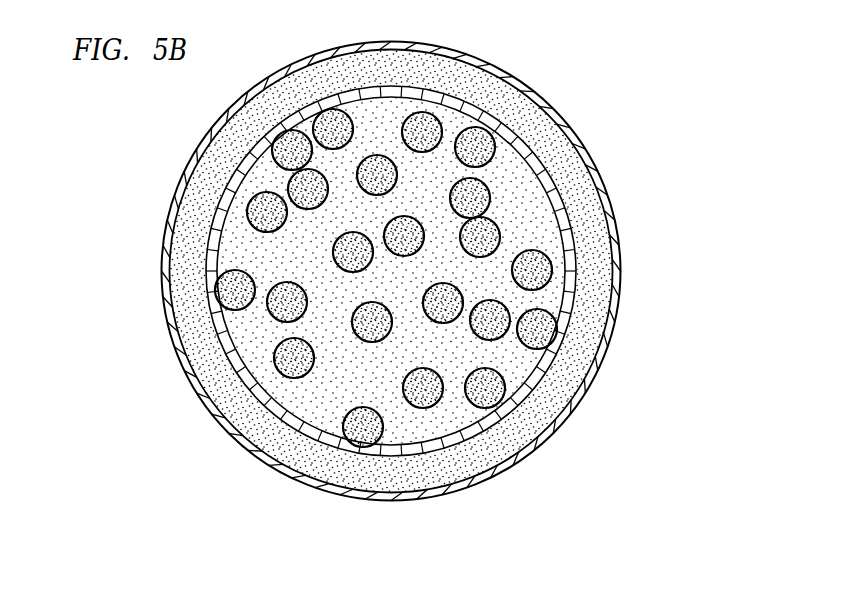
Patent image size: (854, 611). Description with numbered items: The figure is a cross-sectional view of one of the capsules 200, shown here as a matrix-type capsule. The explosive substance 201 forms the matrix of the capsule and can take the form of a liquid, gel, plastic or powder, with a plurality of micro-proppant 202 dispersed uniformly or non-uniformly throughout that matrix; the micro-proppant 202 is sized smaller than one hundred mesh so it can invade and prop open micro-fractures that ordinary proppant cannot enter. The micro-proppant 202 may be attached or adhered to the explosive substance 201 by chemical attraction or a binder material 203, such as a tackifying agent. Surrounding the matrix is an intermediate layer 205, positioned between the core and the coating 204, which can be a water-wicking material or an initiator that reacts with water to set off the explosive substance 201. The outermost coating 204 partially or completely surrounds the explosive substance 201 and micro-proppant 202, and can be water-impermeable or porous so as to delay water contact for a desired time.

The capsule 200 is at (602, 84).
The explosive substance 201 is at (524, 211).
The micro-proppant 202 is at (550, 332).
The binder material 203 is at (206, 402).
The coating 204 is at (176, 193).
The intermediate layer 205 is at (208, 264).